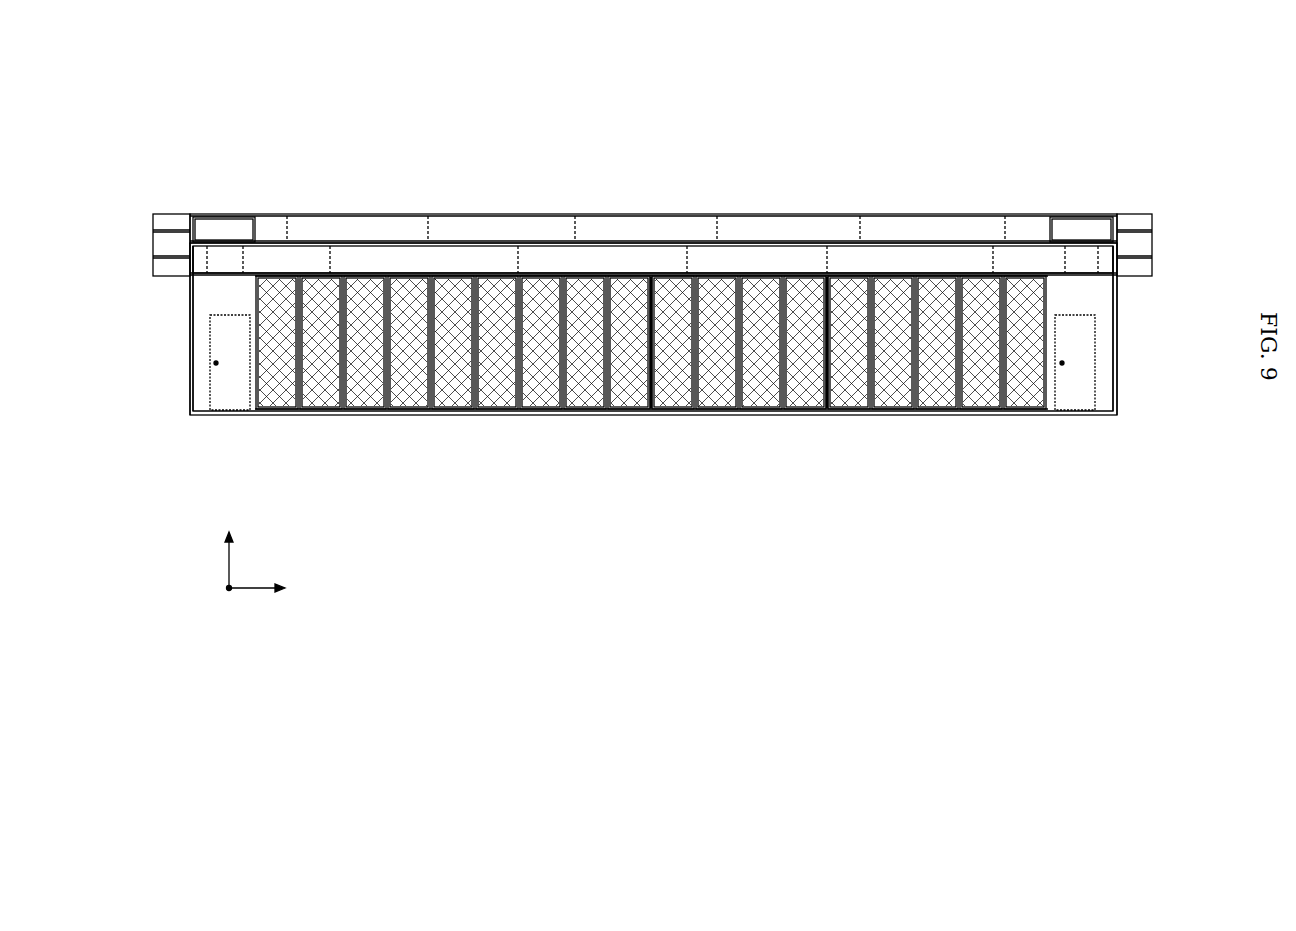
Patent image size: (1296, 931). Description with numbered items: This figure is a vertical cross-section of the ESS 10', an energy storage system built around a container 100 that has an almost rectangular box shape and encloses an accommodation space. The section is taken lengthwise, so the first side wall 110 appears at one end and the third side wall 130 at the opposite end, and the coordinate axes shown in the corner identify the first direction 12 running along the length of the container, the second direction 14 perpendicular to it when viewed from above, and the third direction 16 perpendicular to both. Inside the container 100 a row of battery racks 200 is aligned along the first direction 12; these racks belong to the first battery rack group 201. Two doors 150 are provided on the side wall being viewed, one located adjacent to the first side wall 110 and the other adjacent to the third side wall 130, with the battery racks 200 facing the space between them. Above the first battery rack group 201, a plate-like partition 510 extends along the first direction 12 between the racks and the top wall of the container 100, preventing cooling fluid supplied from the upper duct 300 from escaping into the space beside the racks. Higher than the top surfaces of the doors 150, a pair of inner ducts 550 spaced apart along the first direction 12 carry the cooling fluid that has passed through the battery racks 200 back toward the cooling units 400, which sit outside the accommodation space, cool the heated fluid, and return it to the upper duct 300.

The ESS 10' is at (304, 69).
The container 100 is at (1152, 297).
The first side wall 110 is at (1117, 345).
The third side wall 130 is at (190, 345).
The door 150 is at (230, 395).
The battery rack 200 is at (542, 395).
The first battery rack group 201 is at (733, 422).
The upper duct 300 is at (206, 204).
The cooling unit 400 is at (153, 243).
The partition 510 is at (478, 260).
The inner duct 550 is at (232, 254).
The first direction 12 is at (273, 589).
The second direction 14 is at (228, 592).
The third direction 16 is at (231, 544).